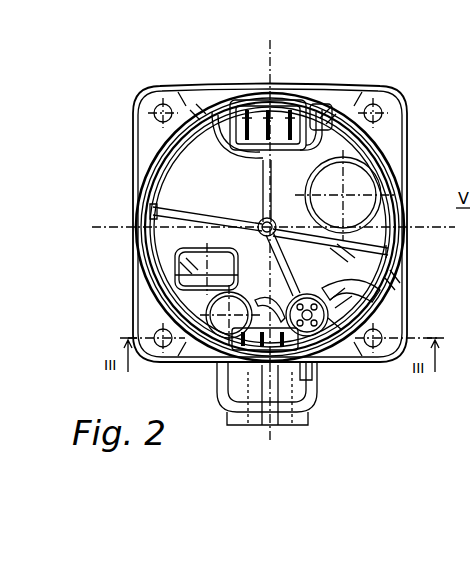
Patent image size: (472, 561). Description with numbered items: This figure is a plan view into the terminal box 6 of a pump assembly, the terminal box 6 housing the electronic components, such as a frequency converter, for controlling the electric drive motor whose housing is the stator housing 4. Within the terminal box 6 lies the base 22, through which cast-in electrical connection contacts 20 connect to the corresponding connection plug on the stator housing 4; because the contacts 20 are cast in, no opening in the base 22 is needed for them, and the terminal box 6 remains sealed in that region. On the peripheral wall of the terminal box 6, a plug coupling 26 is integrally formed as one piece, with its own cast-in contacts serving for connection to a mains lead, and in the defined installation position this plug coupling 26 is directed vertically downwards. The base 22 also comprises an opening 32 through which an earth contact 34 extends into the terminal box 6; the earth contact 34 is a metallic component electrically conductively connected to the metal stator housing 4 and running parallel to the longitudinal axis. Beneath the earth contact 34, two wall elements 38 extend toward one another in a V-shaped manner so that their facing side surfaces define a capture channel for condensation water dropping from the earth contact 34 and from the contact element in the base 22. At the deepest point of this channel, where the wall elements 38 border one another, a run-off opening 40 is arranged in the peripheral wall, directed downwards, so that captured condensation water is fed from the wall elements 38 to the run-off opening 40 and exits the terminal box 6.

The stator housing 4 is at (398, 113).
The terminal box 6 is at (132, 194).
The electrical connection contacts 20 is at (273, 99).
The base 22 is at (247, 199).
The plug coupling 26 is at (246, 412).
The opening 32 is at (326, 350).
The earth contact 34 is at (395, 289).
The wall elements 38 is at (283, 370).
The run-off opening 40 is at (306, 380).